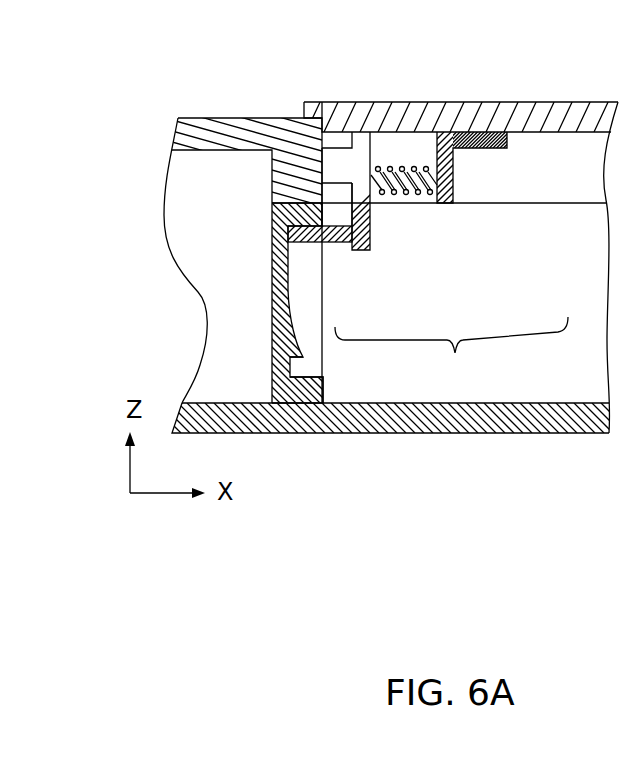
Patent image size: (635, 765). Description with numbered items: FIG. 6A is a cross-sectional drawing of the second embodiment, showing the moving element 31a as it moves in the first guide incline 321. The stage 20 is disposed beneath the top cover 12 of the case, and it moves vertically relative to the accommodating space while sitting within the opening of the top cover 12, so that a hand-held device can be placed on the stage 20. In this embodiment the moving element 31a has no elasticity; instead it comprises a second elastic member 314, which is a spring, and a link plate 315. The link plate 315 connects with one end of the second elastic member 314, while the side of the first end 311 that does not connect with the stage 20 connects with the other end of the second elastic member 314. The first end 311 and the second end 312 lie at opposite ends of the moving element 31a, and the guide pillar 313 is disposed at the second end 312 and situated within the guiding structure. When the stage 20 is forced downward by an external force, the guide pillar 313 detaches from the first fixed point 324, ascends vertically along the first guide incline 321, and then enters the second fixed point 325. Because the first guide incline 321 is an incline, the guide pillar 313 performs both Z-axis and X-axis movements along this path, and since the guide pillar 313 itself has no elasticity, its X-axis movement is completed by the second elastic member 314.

The top cover 12 is at (203, 142).
The stage 20 is at (455, 122).
The first end 311 is at (357, 129).
The second end 312 is at (372, 248).
The guide pillar 313 is at (340, 246).
The second elastic member 314 is at (415, 187).
The link plate 315 is at (452, 180).
The moving element 31a is at (451, 356).
The first guide incline 321 is at (294, 299).
The first fixed point 324 is at (285, 228).
The second fixed point 325 is at (290, 375).